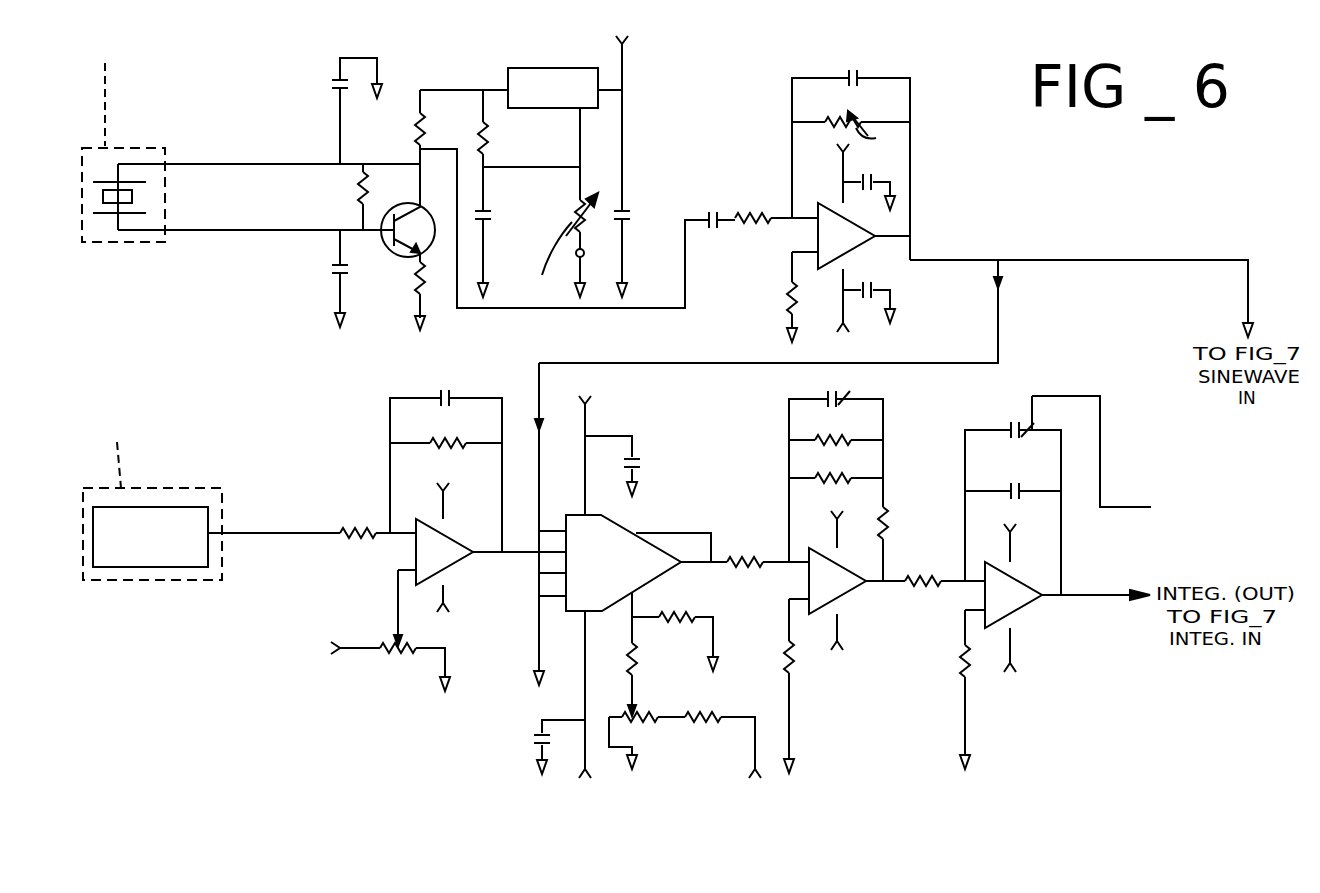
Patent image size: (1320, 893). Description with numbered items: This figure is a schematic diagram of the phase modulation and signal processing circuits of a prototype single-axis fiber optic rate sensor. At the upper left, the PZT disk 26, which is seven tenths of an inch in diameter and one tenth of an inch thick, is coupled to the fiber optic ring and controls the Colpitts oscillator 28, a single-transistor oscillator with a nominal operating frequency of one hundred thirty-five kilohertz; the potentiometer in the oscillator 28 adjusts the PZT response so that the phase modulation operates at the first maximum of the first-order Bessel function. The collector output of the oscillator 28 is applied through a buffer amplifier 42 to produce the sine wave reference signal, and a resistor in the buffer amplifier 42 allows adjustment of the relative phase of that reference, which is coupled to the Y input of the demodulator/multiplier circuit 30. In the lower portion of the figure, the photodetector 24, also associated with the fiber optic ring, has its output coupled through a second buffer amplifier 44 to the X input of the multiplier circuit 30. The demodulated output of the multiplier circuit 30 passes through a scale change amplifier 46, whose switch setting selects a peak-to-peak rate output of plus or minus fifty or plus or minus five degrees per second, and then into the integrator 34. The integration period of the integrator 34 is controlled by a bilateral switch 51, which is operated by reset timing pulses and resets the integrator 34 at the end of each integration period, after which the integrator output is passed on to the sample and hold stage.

The photodetector 24 is at (123, 567).
The PZT disk 26 is at (100, 207).
The PZT-controlled Colpitts oscillator 28 is at (445, 345).
The demodulator/multiplier circuit 30 is at (767, 808).
The integrator 34 is at (1160, 810).
The buffer amplifier 42 is at (945, 60).
The buffer amplifier 44 is at (497, 692).
The scale change amplifier 46 is at (930, 810).
The bilateral switch 51 is at (1012, 424).